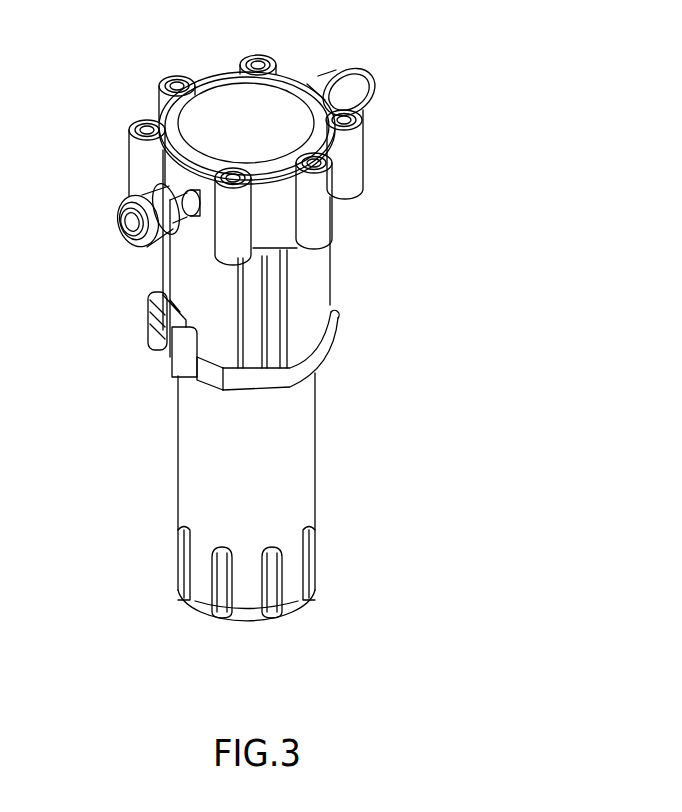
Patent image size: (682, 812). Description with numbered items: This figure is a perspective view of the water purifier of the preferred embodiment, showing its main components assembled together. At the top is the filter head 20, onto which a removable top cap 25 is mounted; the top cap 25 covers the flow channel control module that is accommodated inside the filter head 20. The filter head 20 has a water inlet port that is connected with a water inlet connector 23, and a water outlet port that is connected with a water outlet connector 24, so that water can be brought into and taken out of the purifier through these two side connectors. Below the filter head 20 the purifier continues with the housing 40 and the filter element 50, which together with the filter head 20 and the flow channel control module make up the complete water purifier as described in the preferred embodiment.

The filter head 20 is at (376, 159).
The water inlet connector 23 is at (145, 193).
The water outlet connector 24 is at (360, 87).
The removable top cap 25 is at (248, 120).
The housing 40 is at (340, 270).
The filter element 50 is at (170, 487).